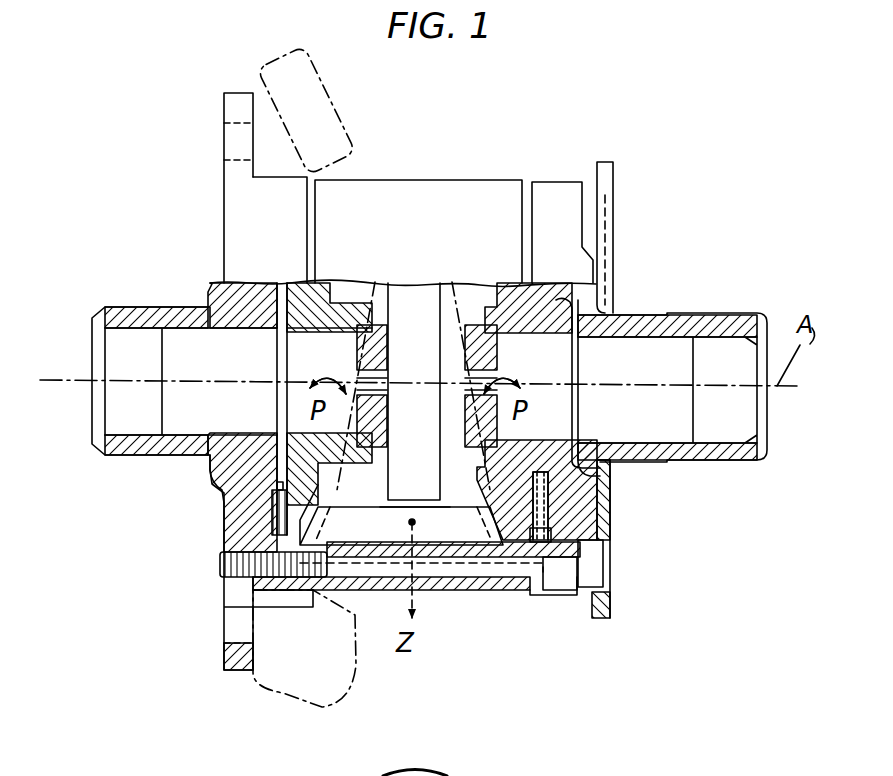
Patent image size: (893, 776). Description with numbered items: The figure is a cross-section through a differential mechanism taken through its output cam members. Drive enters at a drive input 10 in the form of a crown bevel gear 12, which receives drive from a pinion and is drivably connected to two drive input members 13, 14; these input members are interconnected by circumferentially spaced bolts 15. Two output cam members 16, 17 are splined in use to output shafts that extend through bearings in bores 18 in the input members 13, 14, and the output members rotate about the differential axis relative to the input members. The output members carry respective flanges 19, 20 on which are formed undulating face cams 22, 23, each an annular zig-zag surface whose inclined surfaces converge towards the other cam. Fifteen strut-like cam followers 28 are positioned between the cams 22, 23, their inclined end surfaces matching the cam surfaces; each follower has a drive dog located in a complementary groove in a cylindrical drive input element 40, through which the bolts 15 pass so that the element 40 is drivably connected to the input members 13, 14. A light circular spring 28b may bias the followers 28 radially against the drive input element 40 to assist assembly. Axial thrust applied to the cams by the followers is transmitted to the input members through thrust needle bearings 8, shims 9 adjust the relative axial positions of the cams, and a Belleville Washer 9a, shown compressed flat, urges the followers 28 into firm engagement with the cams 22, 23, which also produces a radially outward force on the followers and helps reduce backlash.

The drive input 10 is at (251, 62).
The crown bevel gear 12 is at (346, 118).
The drive input member 13 is at (224, 204).
The drive input member 14 is at (556, 190).
The bolts 15 is at (562, 572).
The output cam member 16 is at (354, 301).
The output cam member 17 is at (487, 300).
The bores 18 is at (147, 420).
The flange 19 is at (303, 448).
The flange 20 is at (600, 484).
The undulating face cam 22 is at (223, 577).
The undulating face cam 23 is at (583, 535).
The cam followers 28 is at (468, 528).
The circular spring 28b is at (408, 300).
The drive input element 40 is at (466, 597).
The thrust needle bearings 8 is at (275, 523).
The shims 9 is at (250, 500).
The Belleville Washer 9a is at (580, 567).